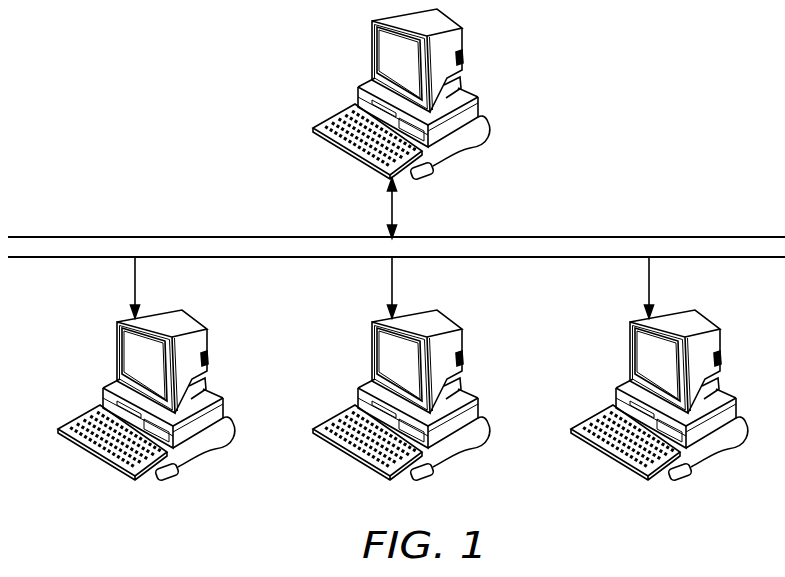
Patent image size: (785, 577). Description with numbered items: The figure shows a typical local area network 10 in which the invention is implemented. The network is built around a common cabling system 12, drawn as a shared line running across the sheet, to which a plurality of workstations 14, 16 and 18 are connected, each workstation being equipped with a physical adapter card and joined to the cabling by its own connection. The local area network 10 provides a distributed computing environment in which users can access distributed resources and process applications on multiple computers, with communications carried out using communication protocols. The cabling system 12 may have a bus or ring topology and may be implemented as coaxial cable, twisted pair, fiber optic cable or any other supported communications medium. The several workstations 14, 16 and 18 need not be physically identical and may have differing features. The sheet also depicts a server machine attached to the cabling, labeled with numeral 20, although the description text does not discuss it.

The local area network 10 is at (84, 164).
The common cabling system 12 is at (670, 237).
The workstation 14 is at (208, 349).
The workstation 16 is at (464, 349).
The workstation 18 is at (722, 349).
The server 20 is at (463, 48).